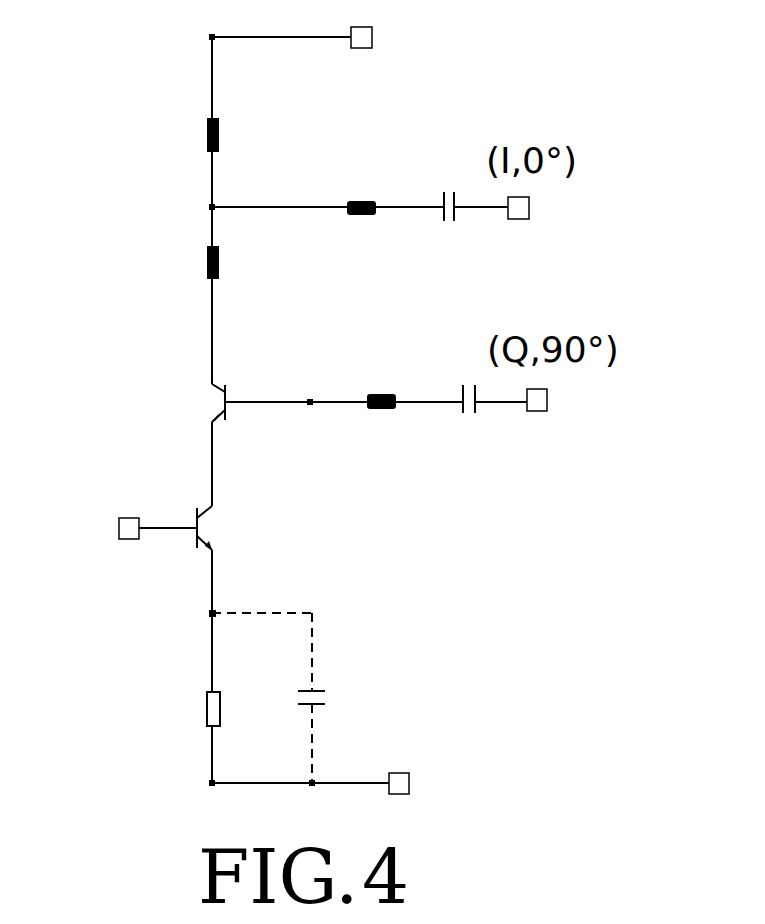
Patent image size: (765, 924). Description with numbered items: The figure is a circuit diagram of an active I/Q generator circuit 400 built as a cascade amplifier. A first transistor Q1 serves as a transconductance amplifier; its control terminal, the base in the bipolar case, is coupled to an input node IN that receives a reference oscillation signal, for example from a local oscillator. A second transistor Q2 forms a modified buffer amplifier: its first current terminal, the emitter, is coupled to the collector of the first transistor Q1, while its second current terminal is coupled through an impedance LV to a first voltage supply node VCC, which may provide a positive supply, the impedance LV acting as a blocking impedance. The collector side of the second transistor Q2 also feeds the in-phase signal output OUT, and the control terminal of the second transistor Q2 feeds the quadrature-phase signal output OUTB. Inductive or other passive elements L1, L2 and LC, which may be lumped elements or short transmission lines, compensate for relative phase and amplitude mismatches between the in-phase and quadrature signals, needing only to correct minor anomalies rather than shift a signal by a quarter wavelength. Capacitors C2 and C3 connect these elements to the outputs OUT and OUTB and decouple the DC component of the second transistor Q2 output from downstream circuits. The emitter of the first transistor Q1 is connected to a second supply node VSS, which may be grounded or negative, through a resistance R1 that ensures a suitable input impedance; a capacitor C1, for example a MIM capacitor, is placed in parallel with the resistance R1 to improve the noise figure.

The active I/Q generator circuit 400 is at (97, 105).
The impedance LV is at (219, 135).
The inductive element LC is at (220, 269).
The inductive element L1 is at (361, 200).
The inductive element L2 is at (377, 393).
The capacitor C1 is at (297, 703).
The capacitor C2 is at (449, 222).
The capacitor C3 is at (469, 414).
The resistance R1 is at (207, 712).
The first transistor Q1 is at (206, 535).
The second transistor Q2 is at (208, 403).
The first voltage supply node VCC is at (377, 37).
The second supply node VSS is at (415, 783).
The input node IN is at (120, 528).
The in-phase signal output OUT is at (535, 208).
The quadrature-phase signal output OUTB is at (558, 400).